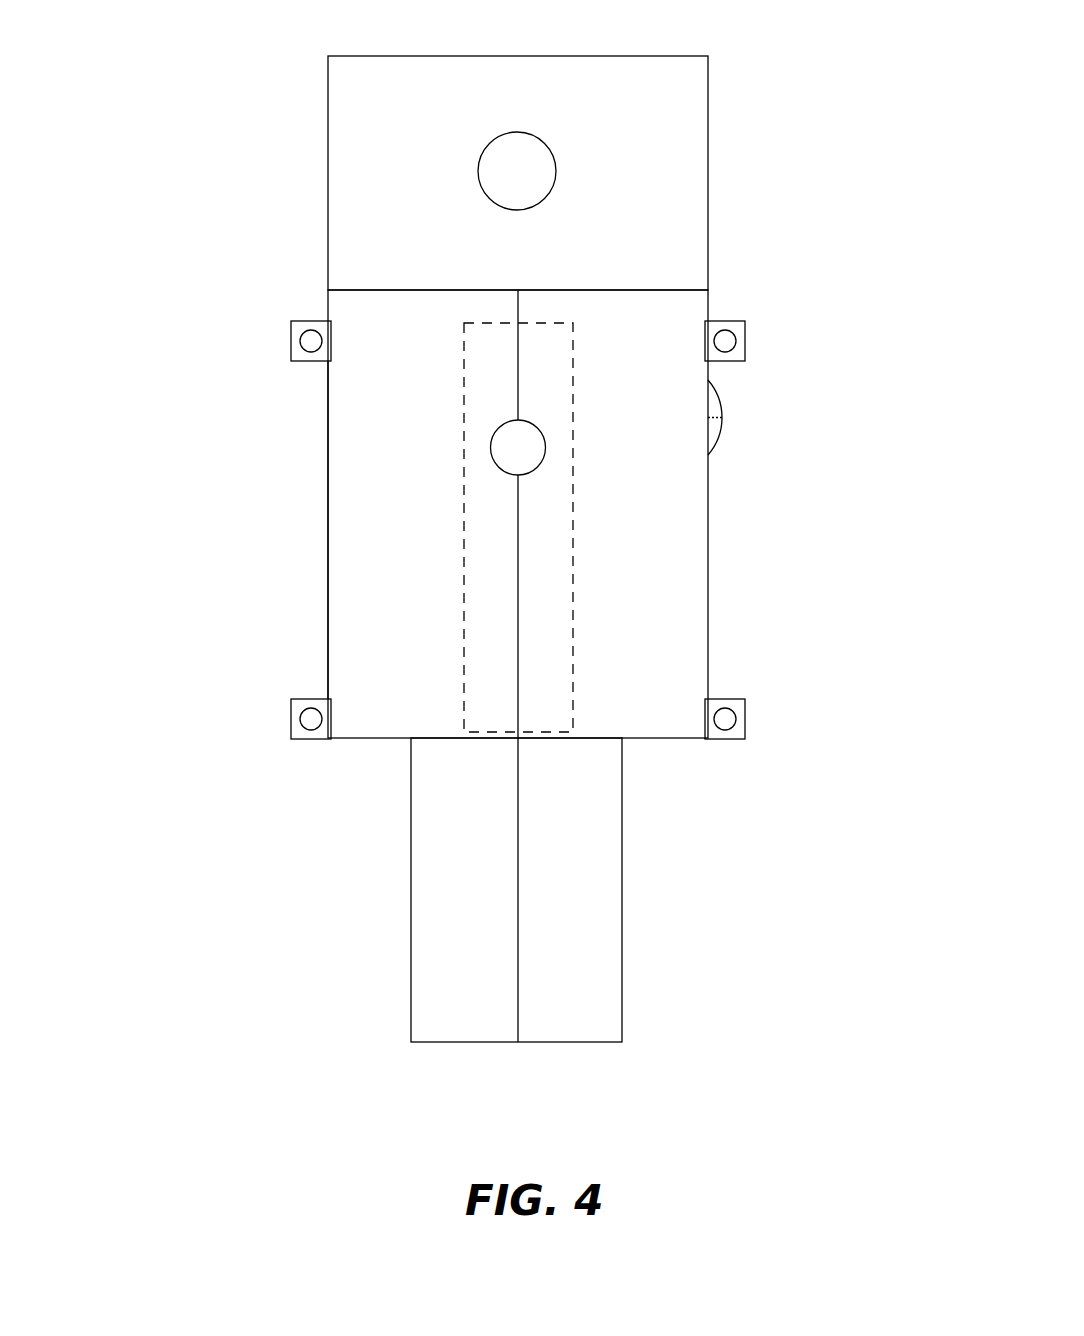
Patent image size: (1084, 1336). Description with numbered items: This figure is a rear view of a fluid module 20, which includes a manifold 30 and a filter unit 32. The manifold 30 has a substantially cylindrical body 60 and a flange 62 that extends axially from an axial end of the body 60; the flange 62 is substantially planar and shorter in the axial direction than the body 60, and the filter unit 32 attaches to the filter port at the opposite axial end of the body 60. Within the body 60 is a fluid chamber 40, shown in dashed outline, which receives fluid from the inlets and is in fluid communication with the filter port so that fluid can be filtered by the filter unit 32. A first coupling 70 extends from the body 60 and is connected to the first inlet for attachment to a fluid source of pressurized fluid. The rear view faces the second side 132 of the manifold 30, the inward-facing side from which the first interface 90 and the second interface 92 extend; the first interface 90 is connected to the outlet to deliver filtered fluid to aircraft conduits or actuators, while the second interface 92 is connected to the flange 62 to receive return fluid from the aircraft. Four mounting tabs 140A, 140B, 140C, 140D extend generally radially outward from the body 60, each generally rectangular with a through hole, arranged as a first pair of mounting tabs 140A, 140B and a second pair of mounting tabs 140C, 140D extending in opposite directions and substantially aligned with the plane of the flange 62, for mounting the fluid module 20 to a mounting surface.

The fluid module 20 is at (504, 549).
The manifold 30 is at (393, 666).
The filter unit 32 is at (396, 913).
The fluid chamber 40 is at (584, 556).
The body 60 is at (315, 527).
The flange 62 is at (306, 158).
The first coupling 70 is at (736, 413).
The first interface 90 is at (557, 462).
The second interface 92 is at (580, 170).
The second side 132 is at (174, 421).
The mounting tab 140A is at (277, 332).
The mounting tab 140B is at (279, 709).
The mounting tab 140C is at (759, 333).
The mounting tab 140D is at (758, 721).